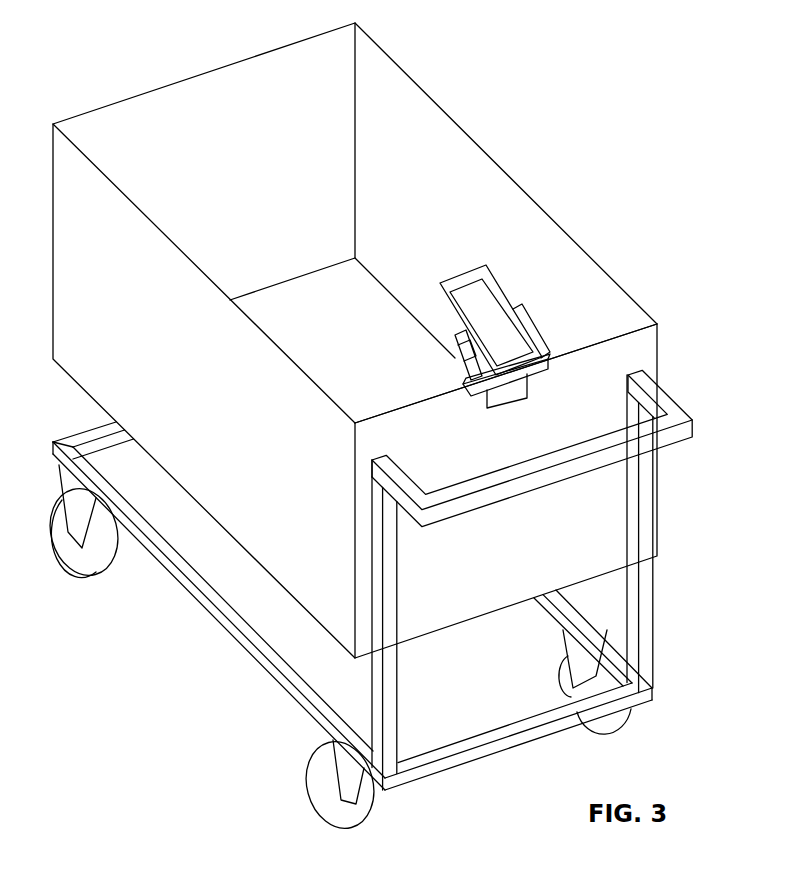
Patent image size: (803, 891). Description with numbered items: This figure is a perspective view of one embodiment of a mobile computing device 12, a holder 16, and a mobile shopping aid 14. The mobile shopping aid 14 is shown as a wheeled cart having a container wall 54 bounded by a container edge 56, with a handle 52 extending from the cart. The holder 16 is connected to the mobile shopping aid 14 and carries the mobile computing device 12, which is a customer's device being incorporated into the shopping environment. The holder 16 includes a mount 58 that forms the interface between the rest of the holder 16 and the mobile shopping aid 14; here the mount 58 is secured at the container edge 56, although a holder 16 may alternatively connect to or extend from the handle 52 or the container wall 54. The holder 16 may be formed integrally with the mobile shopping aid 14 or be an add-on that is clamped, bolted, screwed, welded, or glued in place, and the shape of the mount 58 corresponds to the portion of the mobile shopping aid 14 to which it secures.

The mobile shopping aid 14 is at (549, 153).
The mobile computing device 12 is at (469, 272).
The holder 16 is at (530, 333).
The handle 52 is at (678, 417).
The container wall 54 is at (584, 411).
The container edge 56 is at (412, 405).
The mount 58 is at (505, 398).